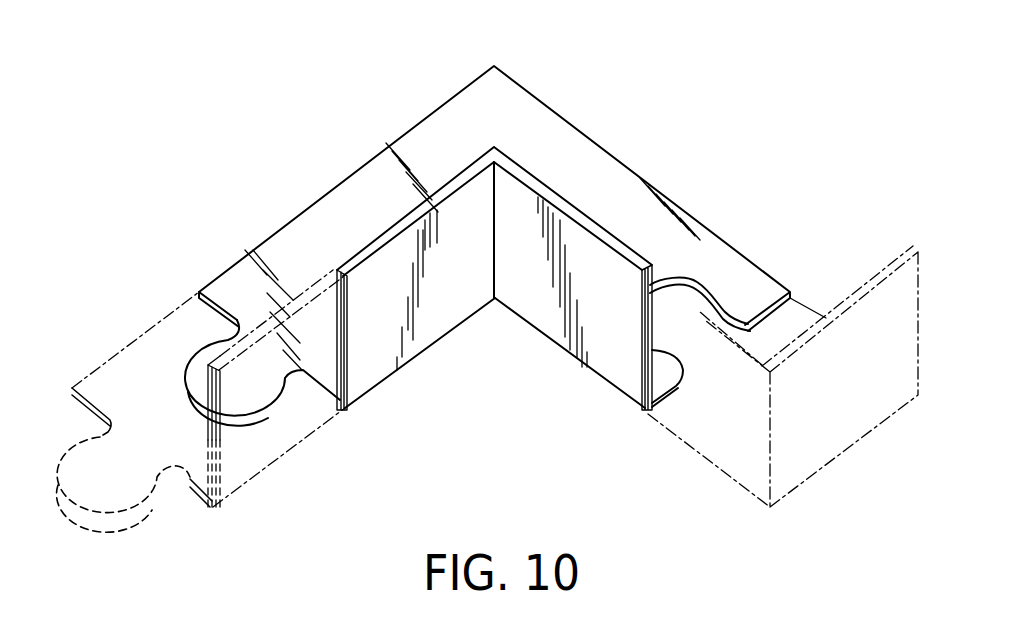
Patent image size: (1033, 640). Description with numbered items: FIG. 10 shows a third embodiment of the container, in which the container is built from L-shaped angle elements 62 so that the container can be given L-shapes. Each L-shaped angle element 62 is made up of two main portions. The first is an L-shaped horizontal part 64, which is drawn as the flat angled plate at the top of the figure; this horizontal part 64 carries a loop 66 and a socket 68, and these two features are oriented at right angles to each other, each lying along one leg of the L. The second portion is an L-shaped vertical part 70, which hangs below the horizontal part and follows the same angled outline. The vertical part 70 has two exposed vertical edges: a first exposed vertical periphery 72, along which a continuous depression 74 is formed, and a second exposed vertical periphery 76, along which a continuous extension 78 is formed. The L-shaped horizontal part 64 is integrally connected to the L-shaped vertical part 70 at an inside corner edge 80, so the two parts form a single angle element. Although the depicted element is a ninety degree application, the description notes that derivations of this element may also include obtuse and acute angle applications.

The L-shaped angle element 62 is at (487, 288).
The L-shaped horizontal part 64 is at (584, 152).
The loop 66 is at (195, 352).
The socket 68 is at (705, 297).
The L-shaped vertical part 70 is at (450, 305).
The first exposed vertical periphery 72 is at (652, 412).
The continuous depression 74 is at (652, 290).
The second exposed vertical periphery 76 is at (342, 411).
The continuous extension 78 is at (338, 270).
The inside corner edge 80 is at (548, 345).